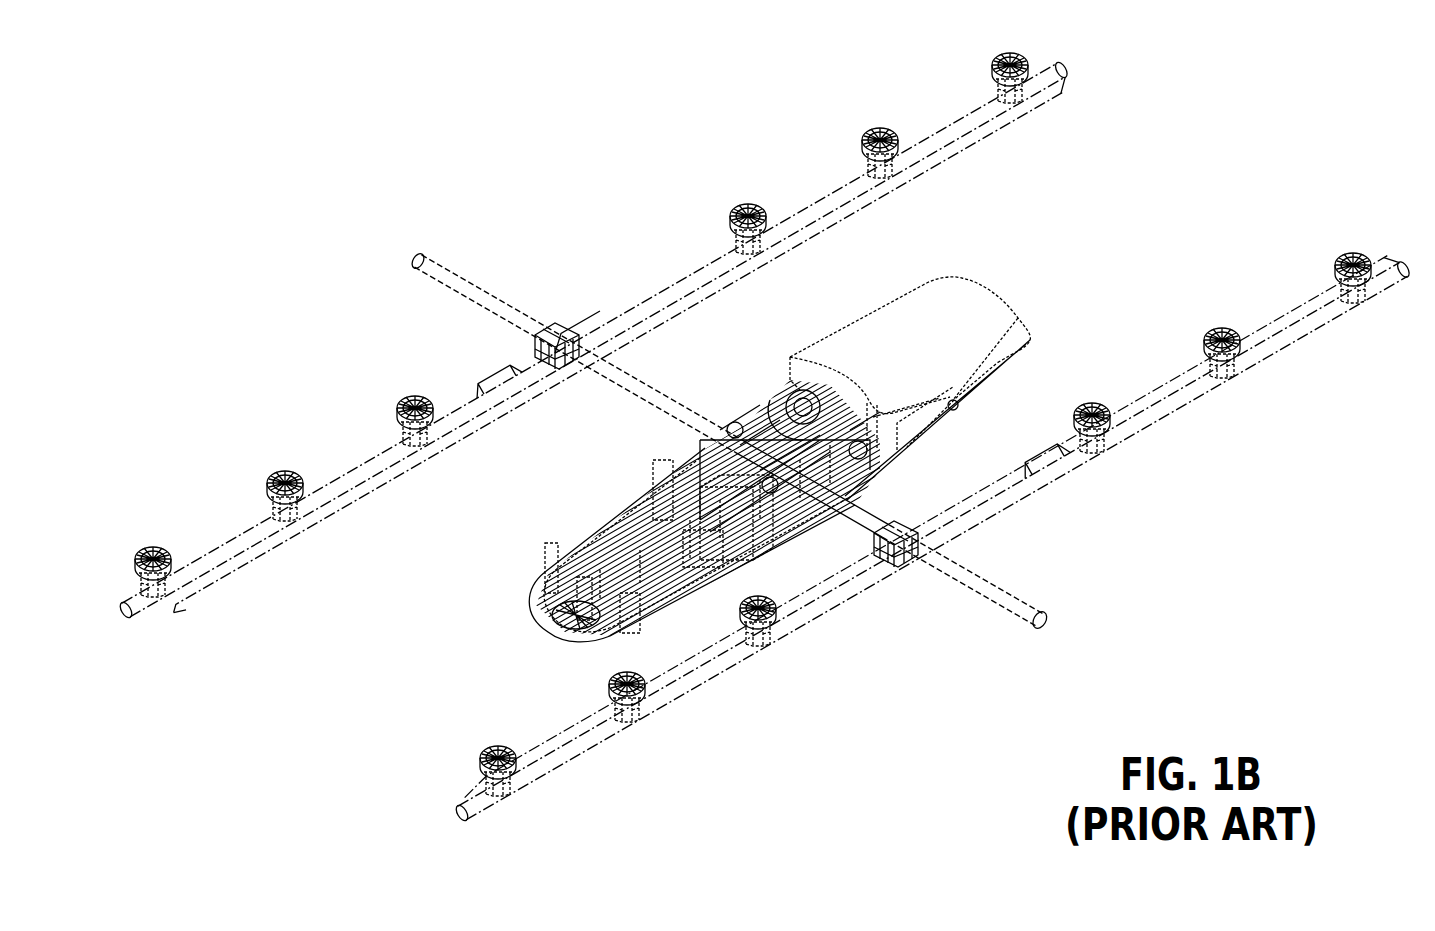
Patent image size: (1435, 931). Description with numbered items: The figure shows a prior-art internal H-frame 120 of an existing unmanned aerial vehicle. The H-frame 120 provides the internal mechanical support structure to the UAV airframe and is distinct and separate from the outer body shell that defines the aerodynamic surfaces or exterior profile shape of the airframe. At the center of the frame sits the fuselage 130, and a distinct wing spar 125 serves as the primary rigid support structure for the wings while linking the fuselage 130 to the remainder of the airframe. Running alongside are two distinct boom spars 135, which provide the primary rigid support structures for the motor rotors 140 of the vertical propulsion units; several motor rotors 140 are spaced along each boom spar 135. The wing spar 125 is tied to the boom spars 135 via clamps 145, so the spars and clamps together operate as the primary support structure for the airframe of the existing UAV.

The internal H-frame 120 is at (318, 122).
The wing spar 125 is at (482, 295).
The fuselage 130 is at (1046, 258).
The boom spars 135 is at (348, 476).
The motor rotors 140 is at (405, 400).
The clamps 145 is at (570, 330).